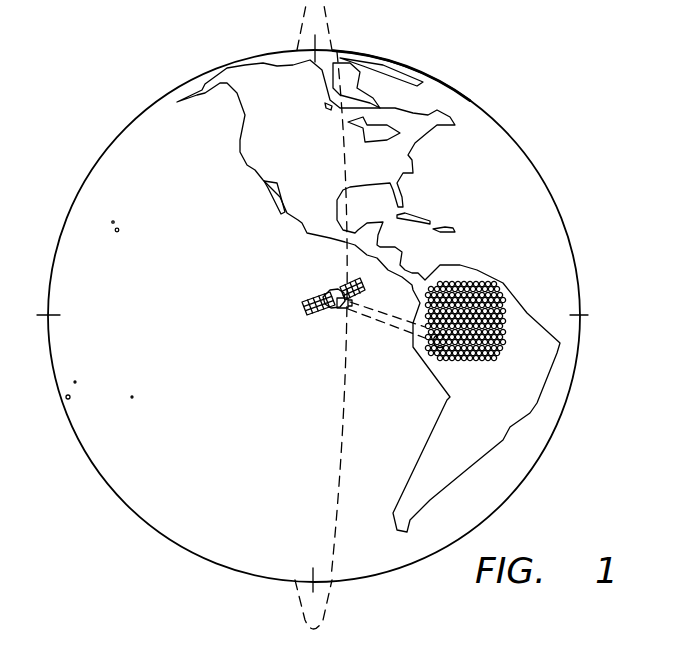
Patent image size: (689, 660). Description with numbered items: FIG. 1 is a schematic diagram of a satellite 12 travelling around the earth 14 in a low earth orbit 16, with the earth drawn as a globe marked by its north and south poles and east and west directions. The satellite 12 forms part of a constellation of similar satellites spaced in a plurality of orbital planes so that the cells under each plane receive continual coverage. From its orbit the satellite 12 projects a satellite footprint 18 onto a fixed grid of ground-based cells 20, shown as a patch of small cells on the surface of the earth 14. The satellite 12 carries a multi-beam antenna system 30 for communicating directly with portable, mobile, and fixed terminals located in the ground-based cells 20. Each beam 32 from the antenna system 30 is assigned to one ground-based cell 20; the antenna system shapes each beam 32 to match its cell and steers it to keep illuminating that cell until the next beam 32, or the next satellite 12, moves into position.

The satellite 12 is at (329, 304).
The earth 14 is at (562, 217).
The low earth orbit 16 is at (300, 31).
The satellite footprint 18 is at (504, 309).
The ground-based cells 20 is at (490, 358).
The multi-beam antenna system 30 is at (341, 309).
The beam 32 is at (397, 329).